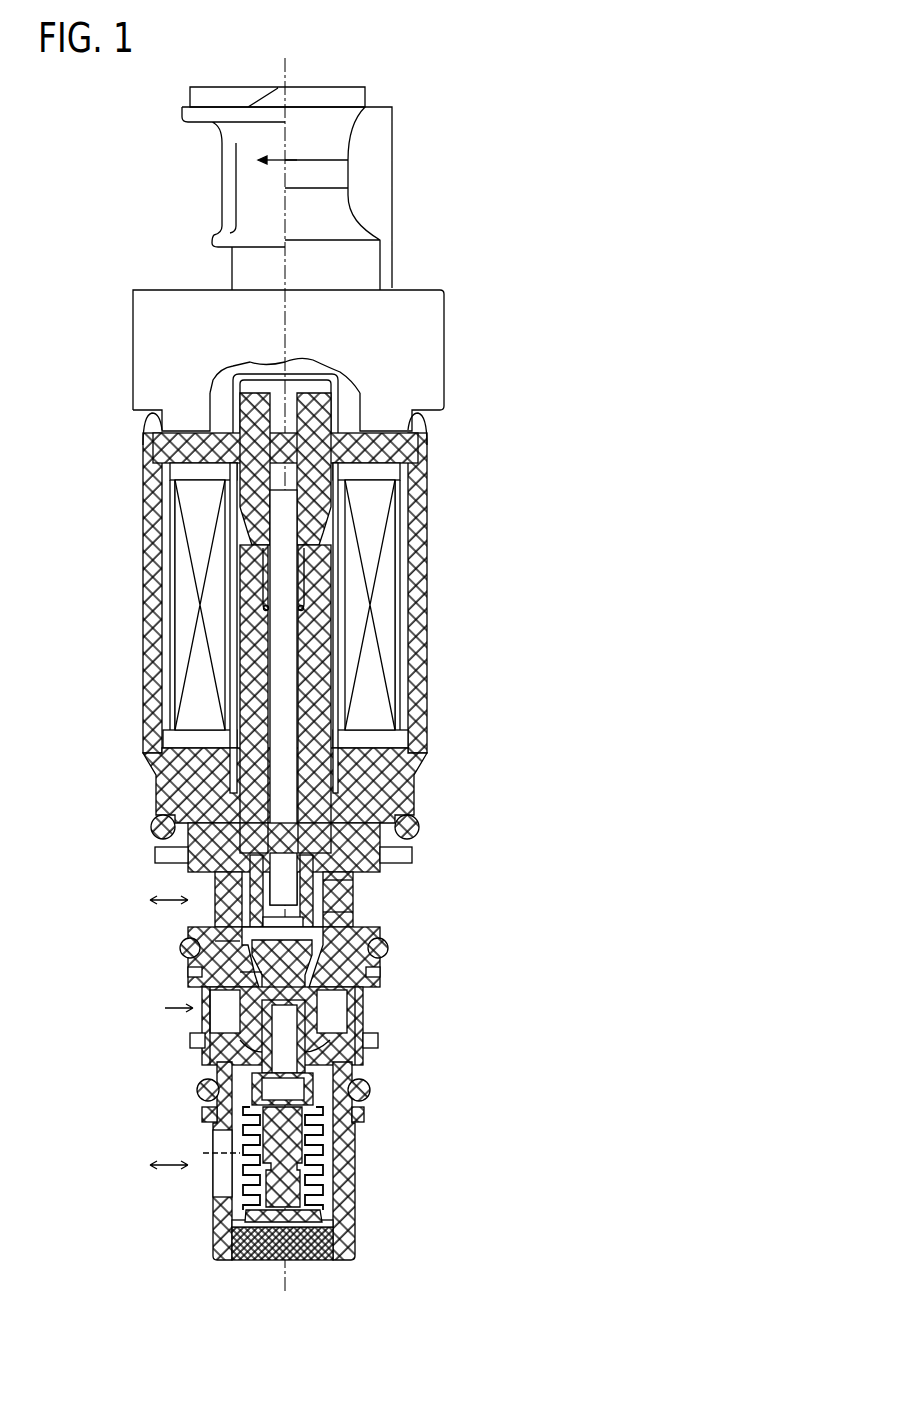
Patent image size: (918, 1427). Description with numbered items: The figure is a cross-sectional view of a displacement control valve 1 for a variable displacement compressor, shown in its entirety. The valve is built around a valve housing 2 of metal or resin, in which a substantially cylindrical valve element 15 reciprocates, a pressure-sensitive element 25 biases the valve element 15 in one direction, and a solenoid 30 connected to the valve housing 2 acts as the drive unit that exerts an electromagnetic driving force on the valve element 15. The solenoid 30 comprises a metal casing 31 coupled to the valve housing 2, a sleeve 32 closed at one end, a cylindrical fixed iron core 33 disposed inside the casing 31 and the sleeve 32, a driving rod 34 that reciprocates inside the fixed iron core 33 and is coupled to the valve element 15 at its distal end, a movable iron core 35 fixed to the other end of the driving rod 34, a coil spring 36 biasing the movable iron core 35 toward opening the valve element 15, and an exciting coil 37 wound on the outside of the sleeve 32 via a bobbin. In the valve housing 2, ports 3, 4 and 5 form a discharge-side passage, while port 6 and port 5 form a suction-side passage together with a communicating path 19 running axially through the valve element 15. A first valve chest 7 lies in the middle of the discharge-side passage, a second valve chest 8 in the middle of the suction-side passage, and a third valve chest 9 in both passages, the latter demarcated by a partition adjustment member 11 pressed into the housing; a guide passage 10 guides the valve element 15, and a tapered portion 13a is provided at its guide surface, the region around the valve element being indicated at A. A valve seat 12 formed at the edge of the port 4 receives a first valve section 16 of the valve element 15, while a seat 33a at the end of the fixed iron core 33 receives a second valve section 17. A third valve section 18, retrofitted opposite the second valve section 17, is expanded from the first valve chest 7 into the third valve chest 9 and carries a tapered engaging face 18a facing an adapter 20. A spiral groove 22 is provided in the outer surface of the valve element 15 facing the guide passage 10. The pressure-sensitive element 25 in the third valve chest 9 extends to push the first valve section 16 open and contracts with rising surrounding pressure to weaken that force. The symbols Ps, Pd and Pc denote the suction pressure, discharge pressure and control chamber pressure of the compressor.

The displacement control valve 1 is at (98, 467).
The valve housing 2 is at (382, 925).
The port 3 is at (207, 1018).
The port (valve hole) 4 is at (193, 1092).
The port 5 is at (220, 1138).
The port 6 is at (215, 910).
The first valve chest 7 is at (207, 998).
The second valve chest 8 is at (250, 893).
The third valve chest 9 is at (213, 1178).
The guide passage 10 is at (330, 1003).
The partition adjustment member 11 is at (298, 1250).
The valve seat 12 is at (233, 1032).
The tapered portion 13a is at (230, 941).
The valve element 15 is at (353, 912).
The first valve section 16 is at (363, 977).
The second valve section 17 is at (353, 893).
The third valve section 18 is at (335, 1060).
The tapered engaging face 18a is at (313, 1092).
The communicating path 19 is at (378, 1046).
The adapter 20 is at (322, 1110).
The spiral groove 22 is at (385, 957).
The pressure-sensitive element 25 is at (322, 1160).
The solenoid 30 is at (150, 608).
The casing 31 is at (395, 790).
The sleeve 32 is at (326, 372).
The fixed iron core 33 is at (412, 749).
The seat 33a is at (353, 880).
The driving rod 34 is at (292, 648).
The movable iron core 35 is at (362, 397).
The coil spring 36 is at (307, 588).
The exciting coil 37 is at (373, 672).
The valve portion A is at (237, 972).
The suction pressure Ps is at (154, 904).
The discharge pressure Pd is at (163, 1011).
The control chamber pressure Pc is at (152, 1166).